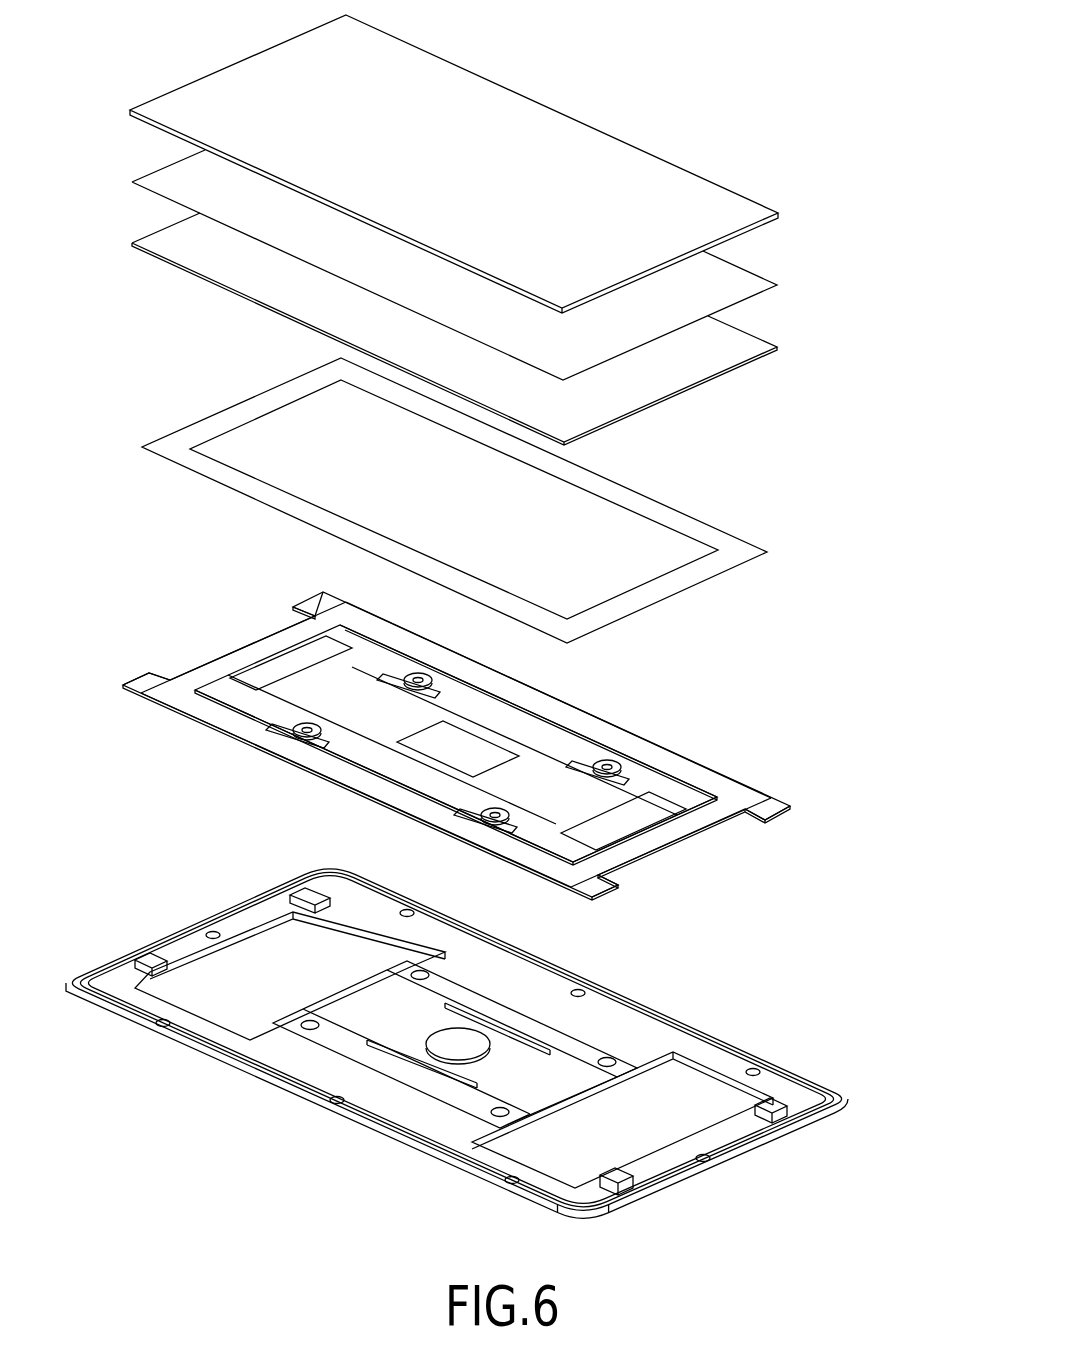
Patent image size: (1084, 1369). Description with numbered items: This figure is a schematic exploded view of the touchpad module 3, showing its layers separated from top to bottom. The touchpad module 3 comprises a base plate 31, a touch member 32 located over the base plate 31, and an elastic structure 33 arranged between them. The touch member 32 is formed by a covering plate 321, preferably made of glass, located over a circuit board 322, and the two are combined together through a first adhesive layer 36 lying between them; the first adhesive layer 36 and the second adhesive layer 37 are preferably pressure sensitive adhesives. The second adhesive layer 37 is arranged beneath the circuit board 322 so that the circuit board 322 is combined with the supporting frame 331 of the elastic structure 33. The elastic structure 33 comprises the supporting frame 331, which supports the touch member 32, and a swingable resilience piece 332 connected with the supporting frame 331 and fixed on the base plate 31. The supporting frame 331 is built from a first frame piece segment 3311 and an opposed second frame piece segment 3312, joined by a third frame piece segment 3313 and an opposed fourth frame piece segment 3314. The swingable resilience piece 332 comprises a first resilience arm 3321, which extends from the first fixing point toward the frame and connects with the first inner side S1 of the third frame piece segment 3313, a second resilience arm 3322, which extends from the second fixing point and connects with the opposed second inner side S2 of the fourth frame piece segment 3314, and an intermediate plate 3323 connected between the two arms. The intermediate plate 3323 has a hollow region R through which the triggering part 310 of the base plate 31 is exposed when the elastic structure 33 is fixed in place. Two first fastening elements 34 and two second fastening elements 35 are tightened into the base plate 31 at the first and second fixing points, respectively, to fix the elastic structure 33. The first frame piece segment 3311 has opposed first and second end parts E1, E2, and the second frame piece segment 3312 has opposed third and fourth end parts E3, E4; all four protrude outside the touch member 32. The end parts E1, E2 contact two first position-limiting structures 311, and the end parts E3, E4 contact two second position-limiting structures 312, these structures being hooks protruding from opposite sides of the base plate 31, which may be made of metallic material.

The touchpad module 3 is at (713, 66).
The base plate 31 is at (461, 1028).
The triggering part 310 is at (447, 1038).
The first position-limiting structures 311 is at (303, 890).
The second position-limiting structures 312 is at (148, 960).
The touch member 32 is at (876, 200).
The covering plate 321 is at (729, 204).
The circuit board 322 is at (737, 342).
The elastic structure 33 is at (753, 702).
The supporting frame 331 is at (873, 783).
The first frame piece segment 3311 is at (563, 712).
The second frame piece segment 3312 is at (373, 783).
The third frame piece segment 3313 is at (250, 655).
The fourth frame piece segment 3314 is at (657, 835).
The swingable resilience piece 332 is at (873, 925).
The first resilience arm 3321 is at (362, 670).
The second resilience arm 3322 is at (640, 790).
The intermediate plate 3323 is at (533, 777).
The first fastening elements 34 is at (293, 737).
The second fastening elements 35 is at (477, 825).
The first adhesive layer 36 is at (727, 280).
The second adhesive layer 37 is at (674, 521).
The first end part E1 is at (317, 601).
The second end part E2 is at (770, 800).
The third end part E3 is at (143, 682).
The fourth end part E4 is at (607, 892).
The first inner side S1 is at (268, 650).
The second inner side S2 is at (632, 823).
The hollow region R is at (452, 742).